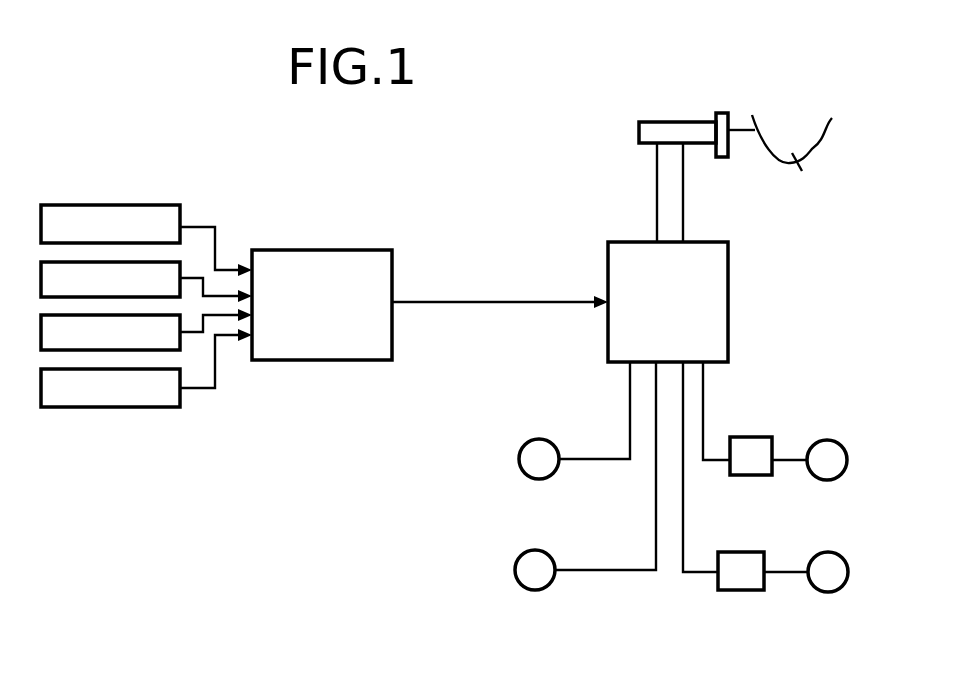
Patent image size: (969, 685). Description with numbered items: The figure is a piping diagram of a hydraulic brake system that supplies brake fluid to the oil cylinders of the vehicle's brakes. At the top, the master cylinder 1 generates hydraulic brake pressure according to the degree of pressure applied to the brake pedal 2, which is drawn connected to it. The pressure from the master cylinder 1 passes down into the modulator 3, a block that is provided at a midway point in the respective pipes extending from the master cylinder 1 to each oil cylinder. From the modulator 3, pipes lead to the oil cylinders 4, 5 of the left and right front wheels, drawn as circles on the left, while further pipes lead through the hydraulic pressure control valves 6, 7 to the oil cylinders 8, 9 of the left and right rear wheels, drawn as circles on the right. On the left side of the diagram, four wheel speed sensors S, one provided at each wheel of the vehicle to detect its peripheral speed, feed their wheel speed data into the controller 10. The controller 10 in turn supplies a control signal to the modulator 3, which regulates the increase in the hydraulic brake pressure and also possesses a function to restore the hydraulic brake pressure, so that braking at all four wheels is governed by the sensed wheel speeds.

The wheel speed sensor S is at (142, 205).
The controller 10 is at (328, 250).
The modulator 3 is at (728, 322).
The master cylinder 1 is at (690, 122).
The brake pedal 2 is at (788, 139).
The oil cylinder 4 is at (520, 465).
The oil cylinder 5 is at (517, 573).
The hydraulic pressure control valve 6 is at (755, 437).
The hydraulic pressure control valve 7 is at (760, 552).
The oil cylinder 8 is at (834, 440).
The oil cylinder 9 is at (840, 553).